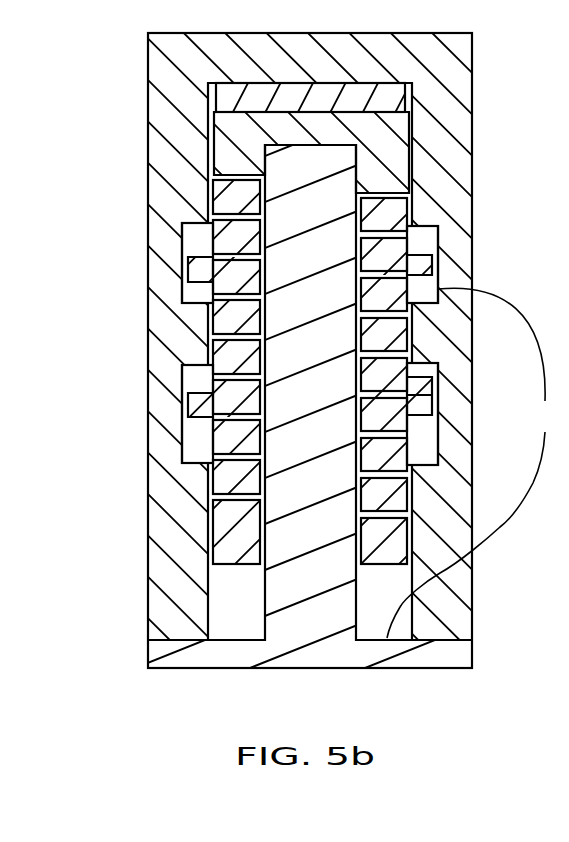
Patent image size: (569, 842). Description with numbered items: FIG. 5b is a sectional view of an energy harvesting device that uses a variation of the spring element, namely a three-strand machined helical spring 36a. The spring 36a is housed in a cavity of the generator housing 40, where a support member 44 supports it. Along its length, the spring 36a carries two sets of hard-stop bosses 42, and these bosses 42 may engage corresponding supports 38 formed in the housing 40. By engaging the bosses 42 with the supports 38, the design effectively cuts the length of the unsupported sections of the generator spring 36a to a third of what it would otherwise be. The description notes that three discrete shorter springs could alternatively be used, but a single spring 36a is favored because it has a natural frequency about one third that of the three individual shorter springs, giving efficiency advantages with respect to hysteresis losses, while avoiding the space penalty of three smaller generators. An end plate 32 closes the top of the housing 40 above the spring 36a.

The end plate 32 is at (406, 97).
The generator housing 40 is at (473, 175).
The hard-stop bosses 42 is at (441, 262).
The supports 38 is at (423, 463).
The three-strand machined helical spring 36a is at (128, 120).
The support member 44 is at (310, 575).